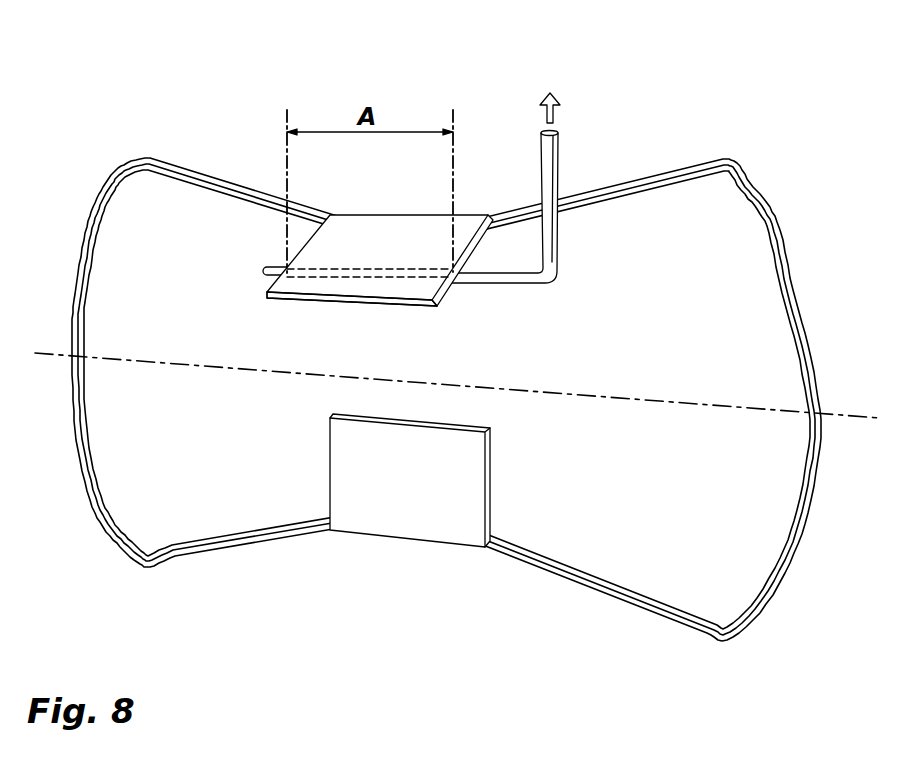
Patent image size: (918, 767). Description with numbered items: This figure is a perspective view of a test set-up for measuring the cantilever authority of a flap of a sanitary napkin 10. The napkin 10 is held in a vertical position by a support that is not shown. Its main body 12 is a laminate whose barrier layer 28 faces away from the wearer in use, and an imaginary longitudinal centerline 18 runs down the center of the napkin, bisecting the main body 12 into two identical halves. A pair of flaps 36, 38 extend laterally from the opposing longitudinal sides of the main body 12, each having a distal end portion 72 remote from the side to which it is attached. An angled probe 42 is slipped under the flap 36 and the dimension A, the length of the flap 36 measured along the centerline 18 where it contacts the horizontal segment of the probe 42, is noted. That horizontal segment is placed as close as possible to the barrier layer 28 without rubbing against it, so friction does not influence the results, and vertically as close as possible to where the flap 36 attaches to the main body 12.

The sanitary napkin 10 is at (742, 158).
The main body 12 is at (658, 502).
The longitudinal centerline 18 is at (838, 415).
The barrier layer 28 is at (660, 338).
The flap 36 is at (337, 303).
The flap 38 is at (370, 416).
The angled probe 42 is at (557, 167).
The distal end portion 72 is at (413, 288).